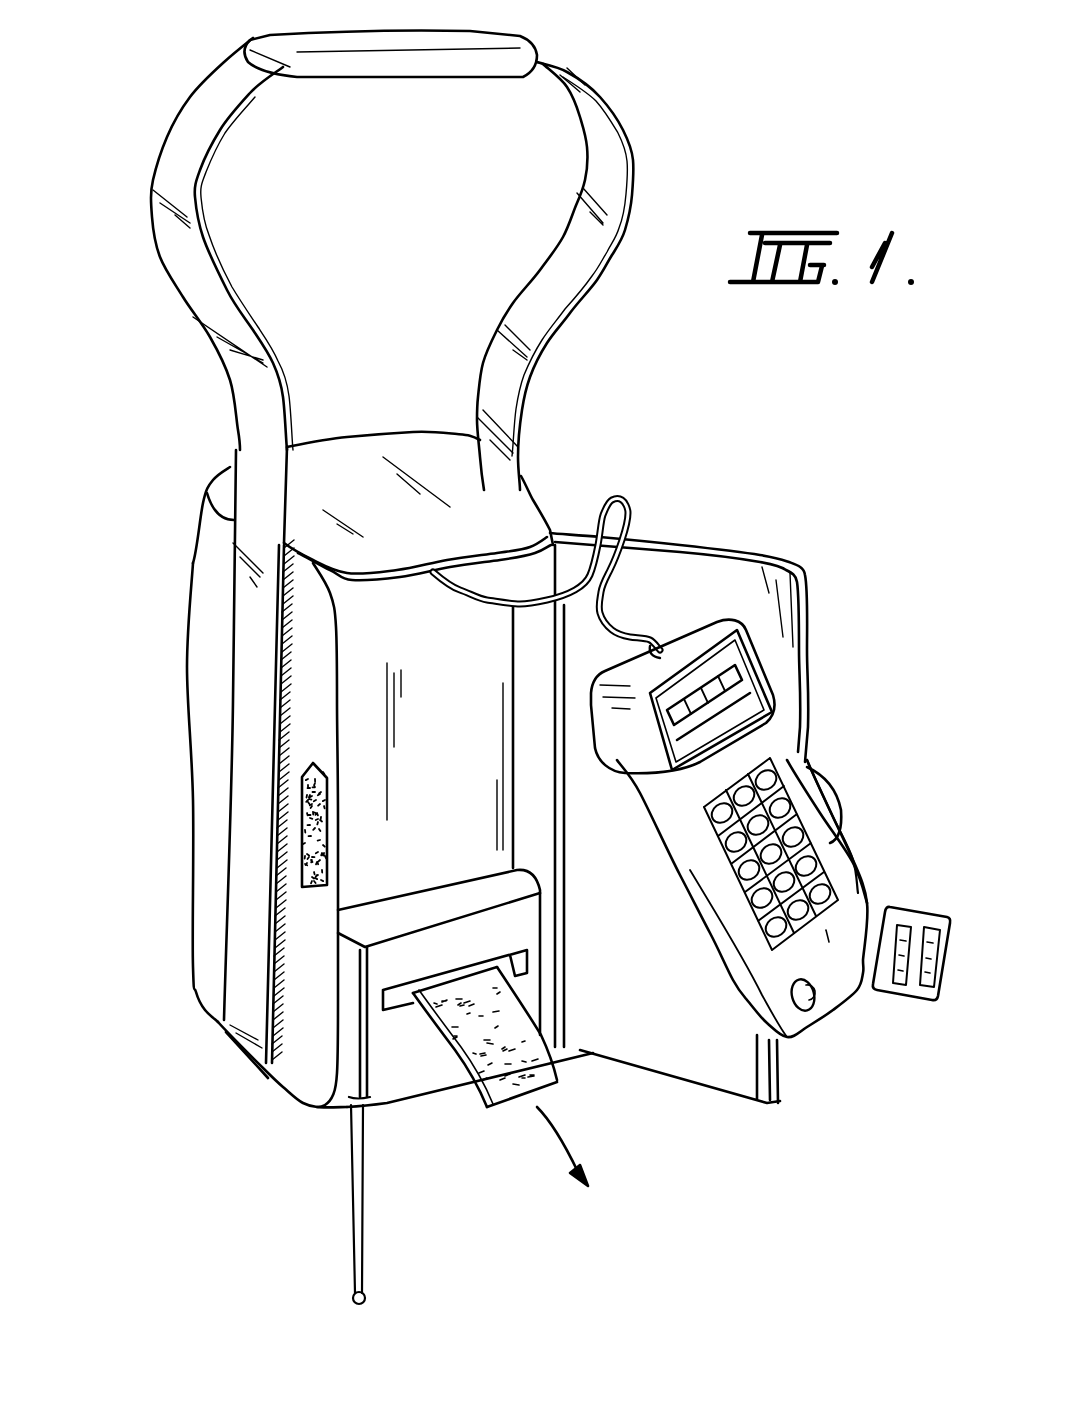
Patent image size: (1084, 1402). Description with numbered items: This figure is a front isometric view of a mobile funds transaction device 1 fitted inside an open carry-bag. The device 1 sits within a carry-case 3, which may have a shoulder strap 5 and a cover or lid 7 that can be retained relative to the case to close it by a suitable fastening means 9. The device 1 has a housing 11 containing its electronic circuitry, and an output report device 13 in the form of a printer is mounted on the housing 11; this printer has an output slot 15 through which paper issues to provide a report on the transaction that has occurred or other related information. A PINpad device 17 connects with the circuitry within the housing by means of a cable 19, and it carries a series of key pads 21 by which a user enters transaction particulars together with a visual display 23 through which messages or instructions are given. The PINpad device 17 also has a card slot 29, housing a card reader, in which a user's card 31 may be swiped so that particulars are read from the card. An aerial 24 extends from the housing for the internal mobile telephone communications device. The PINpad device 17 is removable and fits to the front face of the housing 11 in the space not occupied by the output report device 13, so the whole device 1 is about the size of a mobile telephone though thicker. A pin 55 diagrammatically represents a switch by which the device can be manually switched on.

The mobile funds transaction device 1 is at (455, 700).
The carry-case 3 is at (227, 603).
The shoulder strap 5 is at (636, 150).
The cover or lid 7 is at (710, 577).
The fastening means 9 is at (333, 850).
The housing 11 is at (427, 770).
The output report device 13 is at (423, 1067).
The output slot 15 is at (387, 1020).
The PINpad device 17 is at (700, 783).
The cable 19 is at (621, 497).
The key pads 21 is at (768, 885).
The visual display 23 is at (750, 683).
The aerial 24 is at (365, 1248).
The card slot 29 is at (835, 850).
The user's card 31 is at (910, 993).
The pin 55 is at (808, 1005).